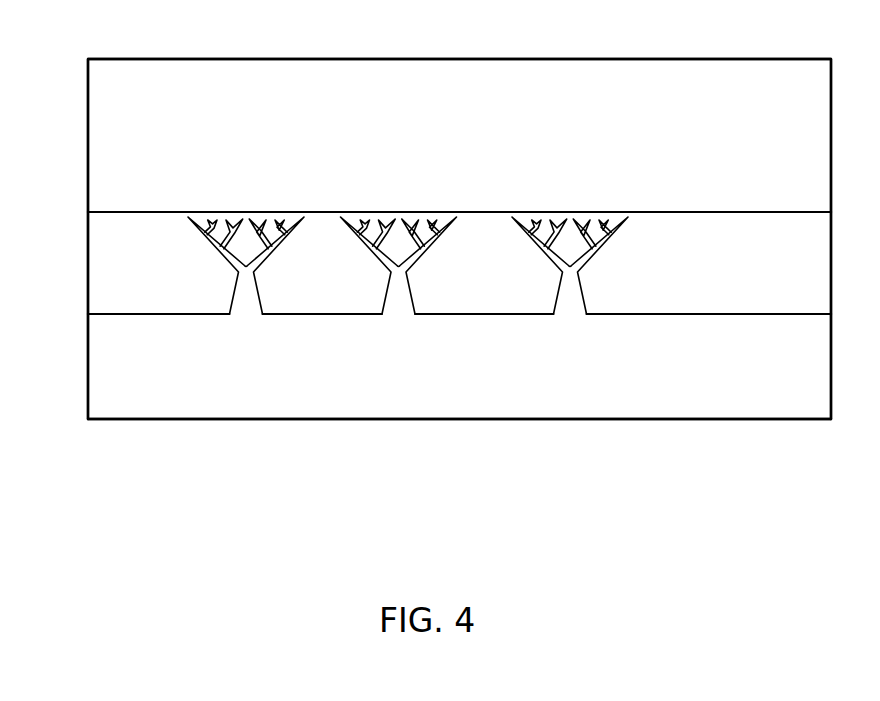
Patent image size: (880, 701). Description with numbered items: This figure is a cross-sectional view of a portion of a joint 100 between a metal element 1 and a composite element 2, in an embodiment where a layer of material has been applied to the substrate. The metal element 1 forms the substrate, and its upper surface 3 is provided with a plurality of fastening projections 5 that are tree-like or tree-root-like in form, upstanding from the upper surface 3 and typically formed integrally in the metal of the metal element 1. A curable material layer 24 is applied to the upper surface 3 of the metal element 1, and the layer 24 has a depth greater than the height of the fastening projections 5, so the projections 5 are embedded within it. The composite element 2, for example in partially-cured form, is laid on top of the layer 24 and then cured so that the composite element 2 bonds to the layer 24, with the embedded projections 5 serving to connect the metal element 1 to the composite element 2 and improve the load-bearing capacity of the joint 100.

The joint 100 is at (469, 486).
The metal element 1 is at (312, 420).
The composite element 2 is at (177, 58).
The curable material layer 24 is at (120, 247).
The upper surface 3 is at (108, 314).
The fastening projections 5 is at (603, 280).